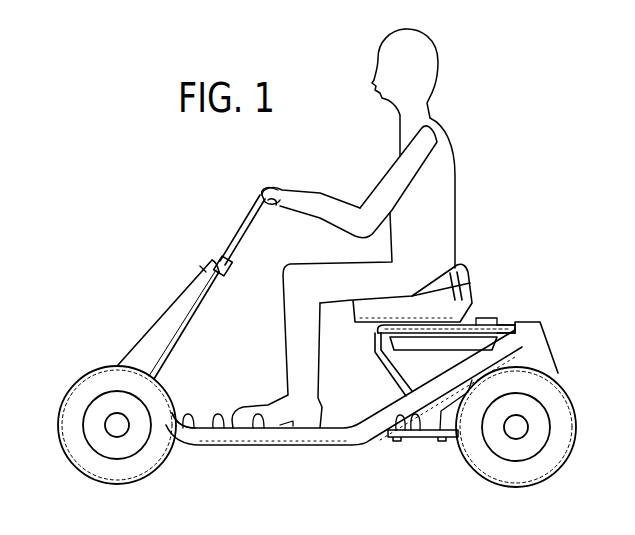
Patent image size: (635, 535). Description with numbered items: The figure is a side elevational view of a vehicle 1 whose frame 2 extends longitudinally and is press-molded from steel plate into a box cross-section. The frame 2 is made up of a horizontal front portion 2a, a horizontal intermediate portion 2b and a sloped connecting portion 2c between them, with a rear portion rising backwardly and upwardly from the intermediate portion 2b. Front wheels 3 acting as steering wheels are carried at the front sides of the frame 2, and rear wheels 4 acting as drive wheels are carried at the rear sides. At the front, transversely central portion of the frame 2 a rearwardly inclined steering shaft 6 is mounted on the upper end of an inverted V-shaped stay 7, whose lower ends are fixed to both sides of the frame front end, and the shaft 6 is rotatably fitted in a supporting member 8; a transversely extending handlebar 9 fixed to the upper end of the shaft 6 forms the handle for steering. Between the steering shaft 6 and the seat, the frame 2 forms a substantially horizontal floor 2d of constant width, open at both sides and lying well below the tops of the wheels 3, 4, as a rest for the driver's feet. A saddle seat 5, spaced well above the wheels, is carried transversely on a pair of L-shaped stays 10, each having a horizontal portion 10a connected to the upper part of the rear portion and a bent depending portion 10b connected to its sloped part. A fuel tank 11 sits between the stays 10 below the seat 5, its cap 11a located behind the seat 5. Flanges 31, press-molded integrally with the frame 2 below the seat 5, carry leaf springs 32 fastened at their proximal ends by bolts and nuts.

The vehicle 1 is at (203, 268).
The frame 2 is at (289, 434).
The horizontal front portion 2a is at (470, 377).
The horizontal intermediate portion 2b is at (218, 421).
The sloped connecting portion 2c is at (186, 440).
The floor 2d is at (259, 423).
The front wheels 3 is at (103, 388).
The rear wheels 4 is at (569, 423).
The saddle seat 5 is at (470, 283).
The steering shaft 6 is at (250, 221).
The inverted V-shaped stay 7 is at (167, 316).
The supporting member 8 is at (226, 268).
The handlebar 9 is at (275, 207).
The L-shaped stay 10 is at (376, 341).
The horizontal portion 10a is at (488, 328).
The bent depending portion 10b is at (392, 370).
The fuel tank 11 is at (443, 342).
The cap 11a is at (490, 317).
The flanges 31 is at (403, 434).
The leaf springs 32 is at (448, 442).